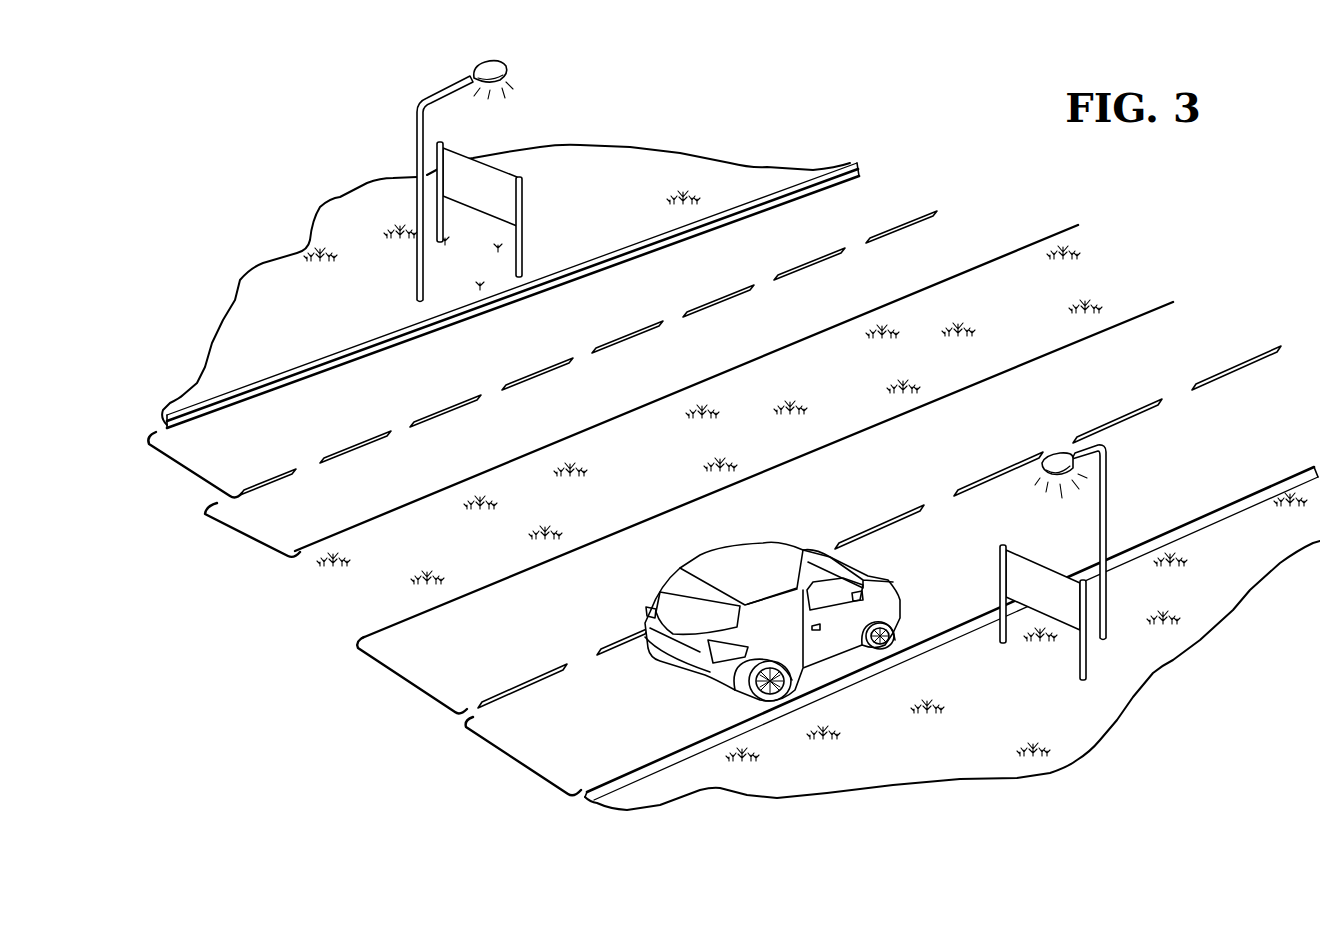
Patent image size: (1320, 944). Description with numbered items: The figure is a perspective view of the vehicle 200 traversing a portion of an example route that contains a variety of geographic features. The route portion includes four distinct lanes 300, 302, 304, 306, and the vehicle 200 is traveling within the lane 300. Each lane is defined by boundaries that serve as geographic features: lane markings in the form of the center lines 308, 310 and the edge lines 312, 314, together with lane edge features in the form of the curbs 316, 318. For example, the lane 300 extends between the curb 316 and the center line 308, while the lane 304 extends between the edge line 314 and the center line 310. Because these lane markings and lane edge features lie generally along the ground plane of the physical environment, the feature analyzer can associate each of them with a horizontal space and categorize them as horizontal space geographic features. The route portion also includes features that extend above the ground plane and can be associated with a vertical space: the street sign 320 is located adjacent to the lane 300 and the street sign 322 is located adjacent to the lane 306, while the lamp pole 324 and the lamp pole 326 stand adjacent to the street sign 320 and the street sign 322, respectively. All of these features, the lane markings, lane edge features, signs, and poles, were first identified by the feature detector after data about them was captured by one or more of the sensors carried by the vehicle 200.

The vehicle 200 is at (775, 541).
The lane 300 is at (503, 757).
The lane 302 is at (402, 681).
The lane 304 is at (240, 535).
The lane 306 is at (196, 473).
The center line 308 is at (535, 678).
The center line 310 is at (342, 447).
The edge line 312 is at (680, 495).
The edge line 314 is at (503, 463).
The curb 316 is at (612, 785).
The curb 318 is at (303, 368).
The street sign 320 is at (1045, 568).
The street sign 322 is at (470, 157).
The lamp pole 324 is at (1107, 483).
The lamp pole 326 is at (417, 140).